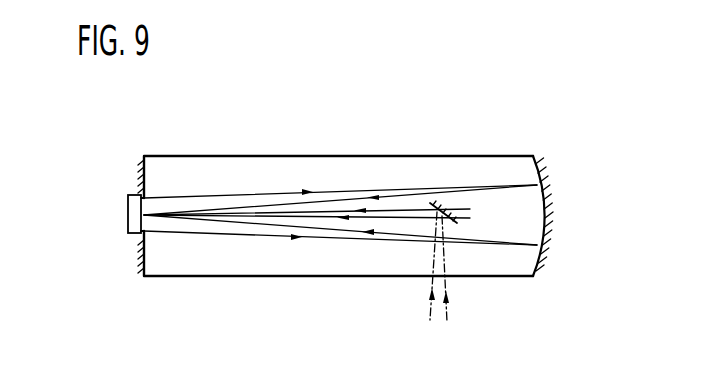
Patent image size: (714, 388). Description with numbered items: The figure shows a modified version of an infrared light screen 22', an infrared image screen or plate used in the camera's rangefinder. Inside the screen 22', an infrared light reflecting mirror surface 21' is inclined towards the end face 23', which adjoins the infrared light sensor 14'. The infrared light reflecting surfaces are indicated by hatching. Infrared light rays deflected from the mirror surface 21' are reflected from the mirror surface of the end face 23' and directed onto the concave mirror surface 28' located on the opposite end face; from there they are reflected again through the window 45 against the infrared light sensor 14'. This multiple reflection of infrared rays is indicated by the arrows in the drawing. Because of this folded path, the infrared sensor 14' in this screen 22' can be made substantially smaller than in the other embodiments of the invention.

The infrared light sensor 14' is at (95, 217).
The infrared light reflecting mirror surface 21' is at (520, 183).
The infrared light screen 22' is at (338, 175).
The end face 23' is at (103, 231).
The concave mirror surface 28' is at (574, 216).
The window 45 is at (143, 198).